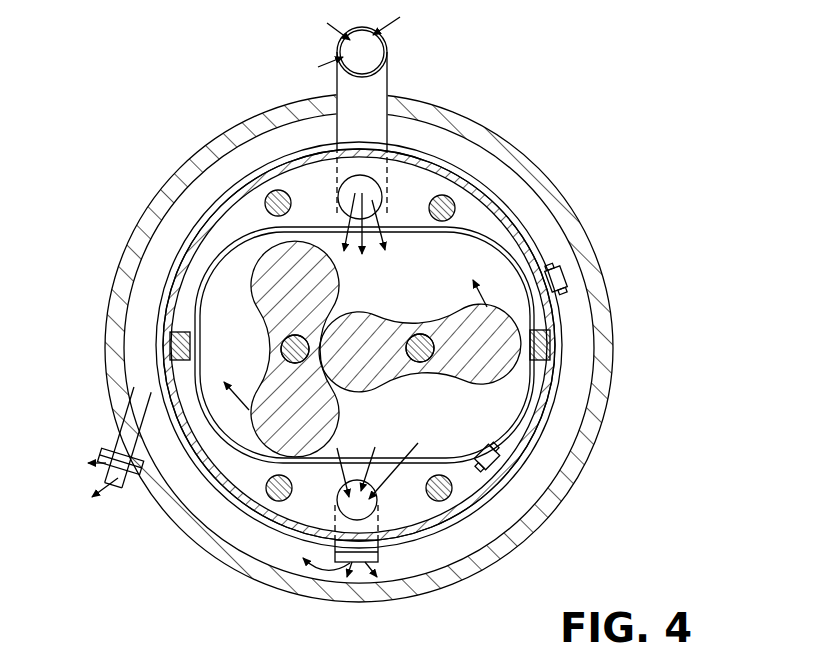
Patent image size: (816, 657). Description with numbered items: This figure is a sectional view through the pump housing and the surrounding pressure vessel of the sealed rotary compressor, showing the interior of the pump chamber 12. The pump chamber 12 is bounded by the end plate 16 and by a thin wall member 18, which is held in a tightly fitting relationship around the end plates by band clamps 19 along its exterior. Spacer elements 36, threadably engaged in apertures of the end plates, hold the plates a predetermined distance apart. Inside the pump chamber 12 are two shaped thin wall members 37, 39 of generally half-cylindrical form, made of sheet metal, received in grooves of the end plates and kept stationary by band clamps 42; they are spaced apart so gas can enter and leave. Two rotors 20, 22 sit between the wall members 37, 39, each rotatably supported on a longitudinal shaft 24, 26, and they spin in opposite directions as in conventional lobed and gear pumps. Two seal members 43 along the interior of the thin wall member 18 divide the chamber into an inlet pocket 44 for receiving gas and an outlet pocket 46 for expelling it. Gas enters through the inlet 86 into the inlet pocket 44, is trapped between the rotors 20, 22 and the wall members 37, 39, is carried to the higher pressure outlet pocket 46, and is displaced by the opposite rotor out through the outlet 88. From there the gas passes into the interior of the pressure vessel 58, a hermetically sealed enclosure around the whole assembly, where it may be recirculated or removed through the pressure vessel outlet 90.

The pump chamber 12 is at (228, 237).
The second end plate 16 is at (537, 217).
The thin wall member 18 is at (482, 190).
The band clamps 19 is at (570, 280).
The rotor 20 is at (463, 383).
The rotor 22 is at (327, 431).
The shaft 24 is at (410, 330).
The shaft 26 is at (281, 347).
The spacer element 36 is at (266, 196).
The shaped thin wall member 37 is at (480, 245).
The shaped thin wall member 39 is at (180, 277).
The band clamps 42 is at (500, 455).
The seal members 43 is at (170, 345).
The inlet pocket 44 is at (320, 198).
The outlet pocket 46 is at (327, 503).
The pressure vessel 58 is at (311, 598).
The inlet 86 is at (375, 52).
The outlet 88 is at (380, 560).
The pressure vessel outlet 90 is at (102, 433).